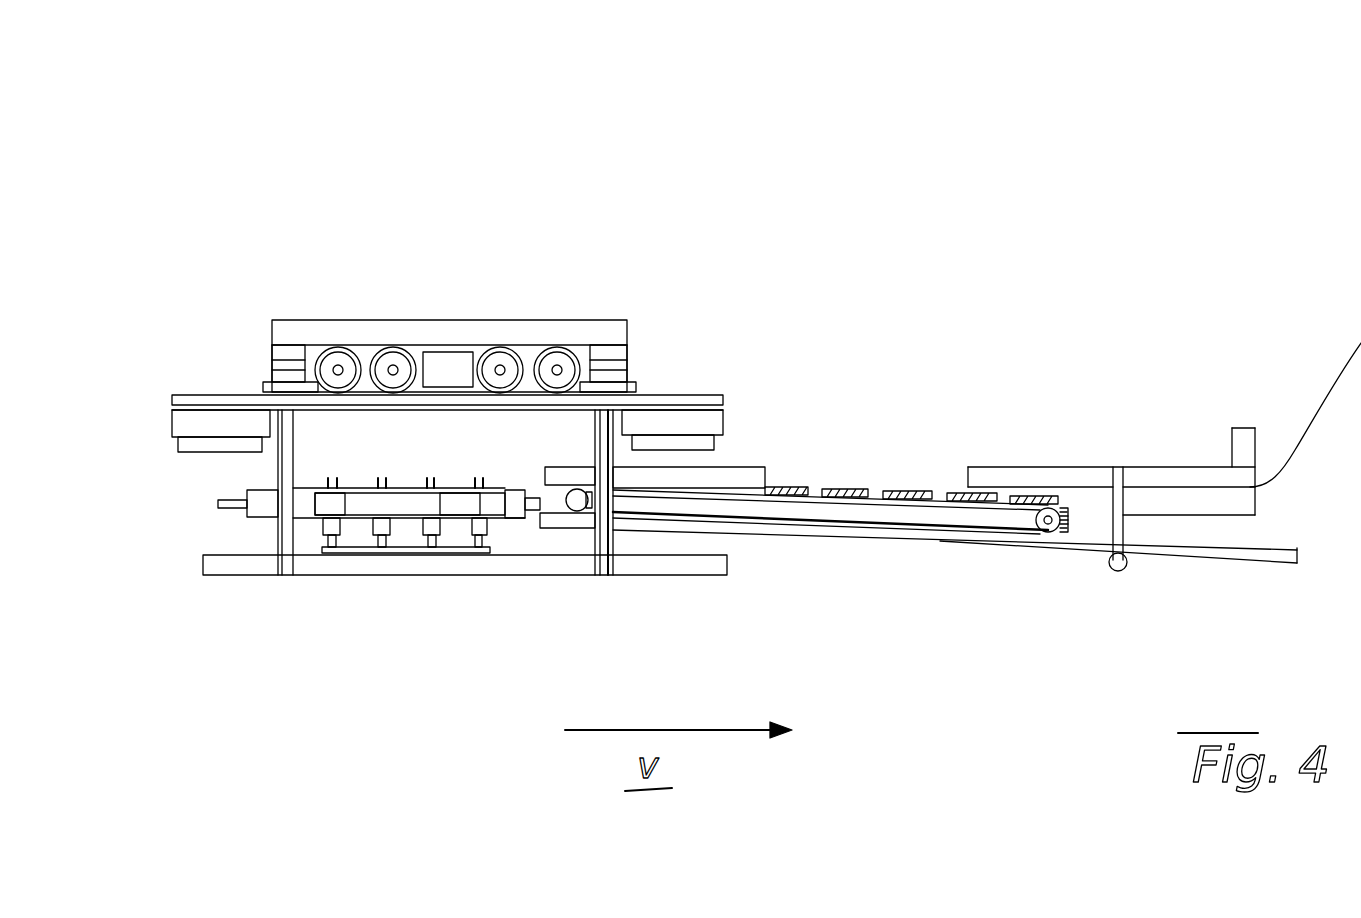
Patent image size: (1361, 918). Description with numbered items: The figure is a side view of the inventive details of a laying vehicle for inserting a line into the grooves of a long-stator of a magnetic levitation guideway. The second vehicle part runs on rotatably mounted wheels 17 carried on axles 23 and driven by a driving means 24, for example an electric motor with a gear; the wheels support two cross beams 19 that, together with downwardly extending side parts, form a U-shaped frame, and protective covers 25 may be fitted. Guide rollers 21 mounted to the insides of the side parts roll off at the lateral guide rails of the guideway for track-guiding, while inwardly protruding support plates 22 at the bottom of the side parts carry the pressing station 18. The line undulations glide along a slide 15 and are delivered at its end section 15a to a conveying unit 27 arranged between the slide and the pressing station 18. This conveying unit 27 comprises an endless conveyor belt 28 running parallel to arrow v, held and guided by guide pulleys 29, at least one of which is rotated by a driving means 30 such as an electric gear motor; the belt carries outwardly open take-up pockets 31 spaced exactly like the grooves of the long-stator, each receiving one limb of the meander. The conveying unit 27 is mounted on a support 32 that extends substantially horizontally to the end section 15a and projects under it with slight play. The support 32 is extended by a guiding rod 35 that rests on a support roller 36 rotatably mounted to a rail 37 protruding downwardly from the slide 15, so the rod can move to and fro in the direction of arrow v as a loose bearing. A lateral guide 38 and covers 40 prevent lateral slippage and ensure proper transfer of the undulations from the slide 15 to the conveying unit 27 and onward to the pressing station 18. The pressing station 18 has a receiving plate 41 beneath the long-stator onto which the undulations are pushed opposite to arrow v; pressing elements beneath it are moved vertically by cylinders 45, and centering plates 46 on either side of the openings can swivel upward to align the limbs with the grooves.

The slide 15 is at (1328, 398).
The end section 15a is at (968, 487).
The wheels 17 is at (506, 366).
The pressing station 18 is at (455, 502).
The cross beams 19 is at (210, 400).
The guide rollers 21 is at (178, 425).
The support plates 22 is at (208, 567).
The axles 23 is at (563, 368).
The driving means 24 is at (442, 370).
The protective covers 25 is at (360, 332).
The conveying unit 27 is at (948, 462).
The conveyor belt 28 is at (902, 492).
The guide pulleys 29 is at (1047, 522).
The driving means 30 is at (577, 502).
The take-up pockets 31 is at (817, 485).
The support 32 is at (816, 544).
The guiding rod 35 is at (903, 533).
The support roller 36 is at (1118, 572).
The rail 37 is at (1113, 512).
The lateral guide 38 is at (1173, 474).
The covers 40 is at (747, 478).
The receiving plate 41 is at (405, 490).
The cylinders 45 is at (327, 525).
The centering plates 46 is at (333, 472).